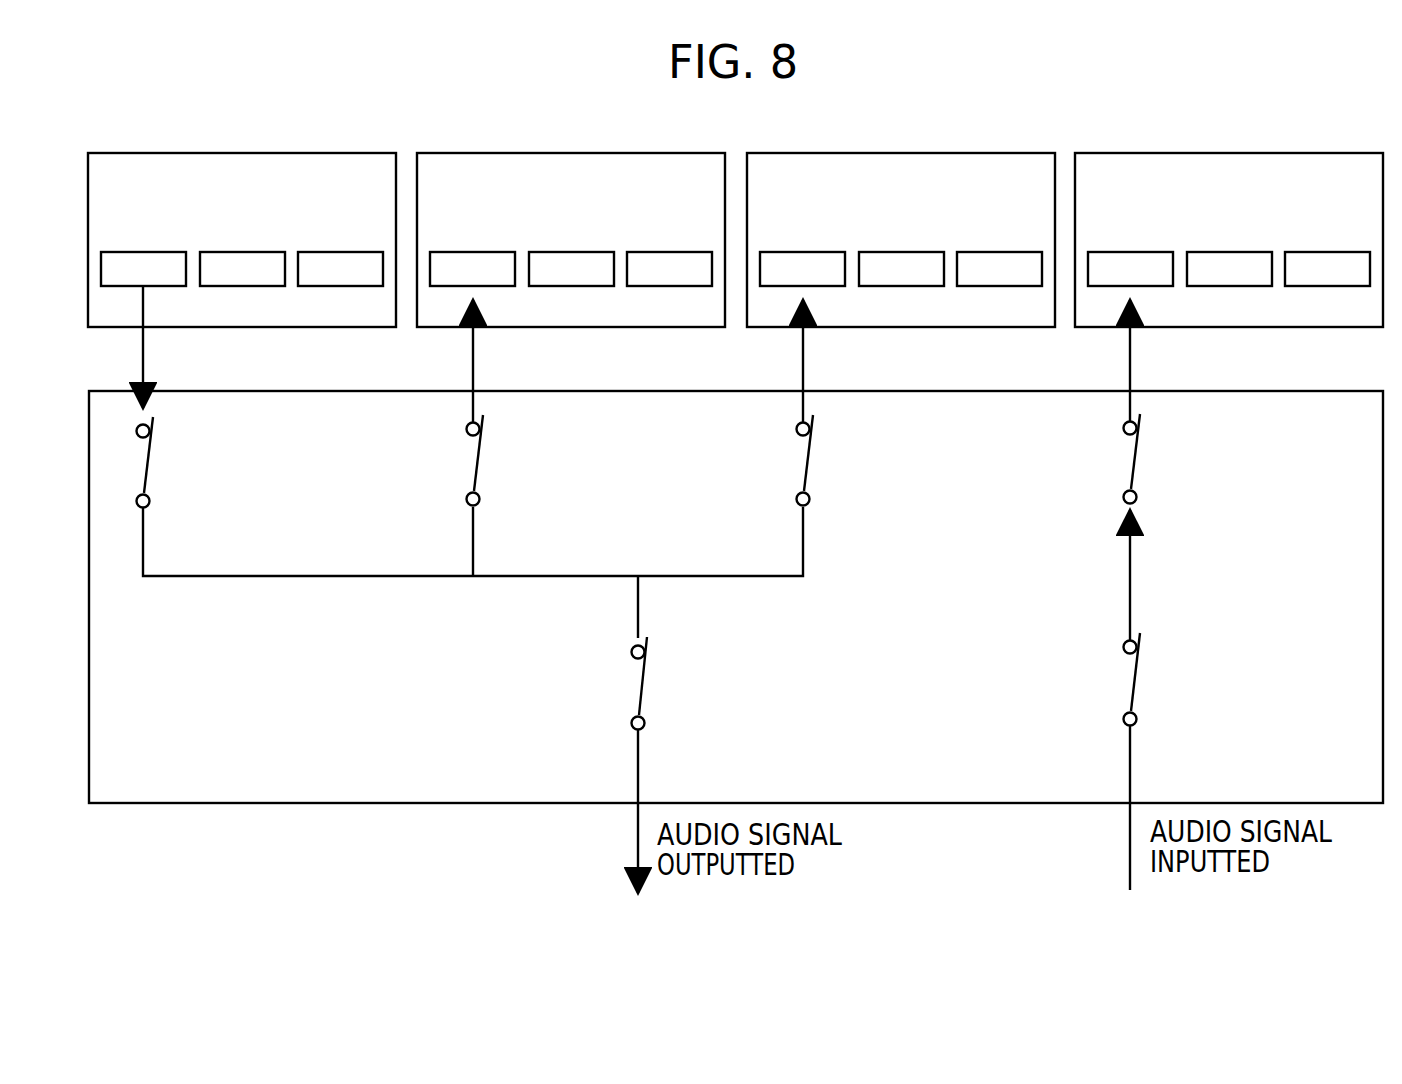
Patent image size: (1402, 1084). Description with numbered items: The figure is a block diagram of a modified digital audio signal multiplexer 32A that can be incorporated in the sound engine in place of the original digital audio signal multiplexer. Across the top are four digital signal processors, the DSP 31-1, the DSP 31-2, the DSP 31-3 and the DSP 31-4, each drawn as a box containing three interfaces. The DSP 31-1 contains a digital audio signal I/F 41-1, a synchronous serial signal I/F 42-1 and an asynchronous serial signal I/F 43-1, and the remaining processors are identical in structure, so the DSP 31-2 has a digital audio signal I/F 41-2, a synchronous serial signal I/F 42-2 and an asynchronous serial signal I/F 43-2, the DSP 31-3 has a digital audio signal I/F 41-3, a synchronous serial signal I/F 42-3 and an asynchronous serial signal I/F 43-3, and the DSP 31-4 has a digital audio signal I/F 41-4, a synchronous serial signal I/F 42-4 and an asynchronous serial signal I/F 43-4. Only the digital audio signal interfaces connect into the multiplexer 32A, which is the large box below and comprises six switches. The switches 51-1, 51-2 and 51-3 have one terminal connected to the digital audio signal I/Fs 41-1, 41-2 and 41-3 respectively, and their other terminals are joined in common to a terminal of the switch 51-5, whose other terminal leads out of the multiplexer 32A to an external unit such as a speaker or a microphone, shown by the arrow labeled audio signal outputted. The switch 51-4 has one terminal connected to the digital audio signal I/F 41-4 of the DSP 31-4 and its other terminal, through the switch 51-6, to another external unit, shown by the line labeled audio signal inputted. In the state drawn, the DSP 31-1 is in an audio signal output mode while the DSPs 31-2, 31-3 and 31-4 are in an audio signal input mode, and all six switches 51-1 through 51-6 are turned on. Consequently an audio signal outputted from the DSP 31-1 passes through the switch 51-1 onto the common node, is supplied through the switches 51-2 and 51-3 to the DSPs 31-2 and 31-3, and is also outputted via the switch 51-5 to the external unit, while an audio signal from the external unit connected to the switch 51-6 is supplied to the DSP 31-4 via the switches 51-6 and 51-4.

The DSP 31-1 is at (122, 153).
The DSP 31-2 is at (451, 153).
The DSP 31-3 is at (781, 153).
The DSP 31-4 is at (1109, 153).
The digital audio signal I/F 41-1 is at (113, 252).
The synchronous serial signal I/F 42-1 is at (213, 252).
The asynchronous serial signal I/F 43-1 is at (311, 252).
The digital audio signal I/F 41-2 is at (442, 252).
The synchronous serial signal I/F 42-2 is at (542, 252).
The asynchronous serial signal I/F 43-2 is at (640, 252).
The digital audio signal I/F 41-3 is at (772, 252).
The synchronous serial signal I/F 42-3 is at (872, 252).
The asynchronous serial signal I/F 43-3 is at (970, 252).
The digital audio signal I/F 41-4 is at (1100, 252).
The synchronous serial signal I/F 42-4 is at (1200, 252).
The asynchronous serial signal I/F 43-4 is at (1298, 252).
The modified digital audio signal multiplexer 32A is at (232, 803).
The switch 51-1 is at (183, 397).
The switch 51-2 is at (513, 403).
The switch 51-3 is at (848, 403).
The switch 51-4 is at (1172, 402).
The switch 51-5 is at (684, 765).
The switch 51-6 is at (1172, 700).